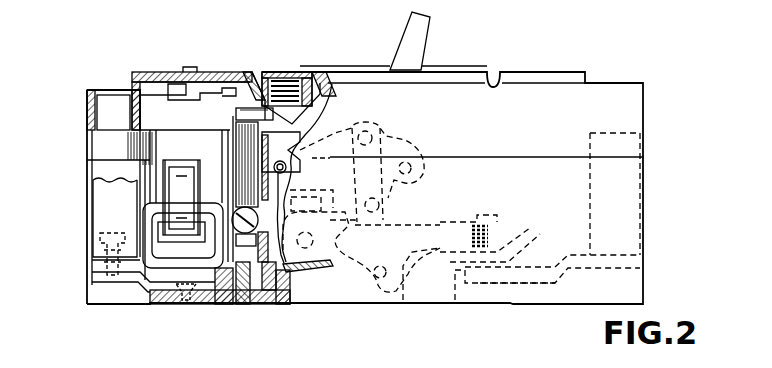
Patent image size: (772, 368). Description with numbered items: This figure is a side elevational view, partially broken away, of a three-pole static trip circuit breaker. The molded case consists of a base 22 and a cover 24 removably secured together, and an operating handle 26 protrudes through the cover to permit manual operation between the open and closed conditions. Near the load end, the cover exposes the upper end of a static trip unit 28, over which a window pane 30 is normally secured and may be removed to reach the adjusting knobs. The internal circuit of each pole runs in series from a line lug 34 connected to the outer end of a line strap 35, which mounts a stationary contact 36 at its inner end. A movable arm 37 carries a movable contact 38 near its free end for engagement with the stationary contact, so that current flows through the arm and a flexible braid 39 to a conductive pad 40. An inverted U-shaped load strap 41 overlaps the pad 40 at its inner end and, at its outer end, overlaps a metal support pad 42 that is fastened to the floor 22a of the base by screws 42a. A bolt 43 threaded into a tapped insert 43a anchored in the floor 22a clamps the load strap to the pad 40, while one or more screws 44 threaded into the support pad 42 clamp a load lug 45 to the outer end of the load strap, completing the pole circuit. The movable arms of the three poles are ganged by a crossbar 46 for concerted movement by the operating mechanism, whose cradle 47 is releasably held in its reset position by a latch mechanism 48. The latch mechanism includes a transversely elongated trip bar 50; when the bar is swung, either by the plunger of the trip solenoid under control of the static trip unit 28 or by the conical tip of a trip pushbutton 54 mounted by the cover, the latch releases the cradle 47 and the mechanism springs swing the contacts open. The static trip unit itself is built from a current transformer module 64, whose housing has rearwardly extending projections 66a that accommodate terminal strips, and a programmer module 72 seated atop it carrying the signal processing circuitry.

The base 22 is at (640, 285).
The floor 22a is at (262, 305).
The cover 24 is at (637, 110).
The operating handle 26 is at (428, 38).
The static trip unit 28 is at (155, 80).
The window pane 30 is at (222, 69).
The line lug 34 is at (645, 195).
The line strap 35 is at (541, 284).
The stationary contact 36 is at (540, 294).
The movable arm 37 is at (448, 274).
The movable contact 38 is at (530, 250).
The flexible braid 39 is at (308, 267).
The conductive pad 40 is at (272, 291).
The load strap 41 is at (212, 205).
The metal support pad 42 is at (128, 277).
The screws 42a is at (186, 300).
The bolt 43 is at (245, 262).
The insert 43a is at (243, 300).
The screws 44 is at (86, 240).
The load lug 45 is at (97, 192).
The crossbar 46 is at (399, 269).
The cradle 47 is at (402, 118).
The latch mechanism 48 is at (290, 133).
The trip bar 50 is at (257, 113).
The trip pushbutton 54 is at (286, 73).
The current transformer module 64 is at (135, 167).
The rearwardly extending projections 66a is at (95, 143).
The programmer module 72 is at (152, 110).